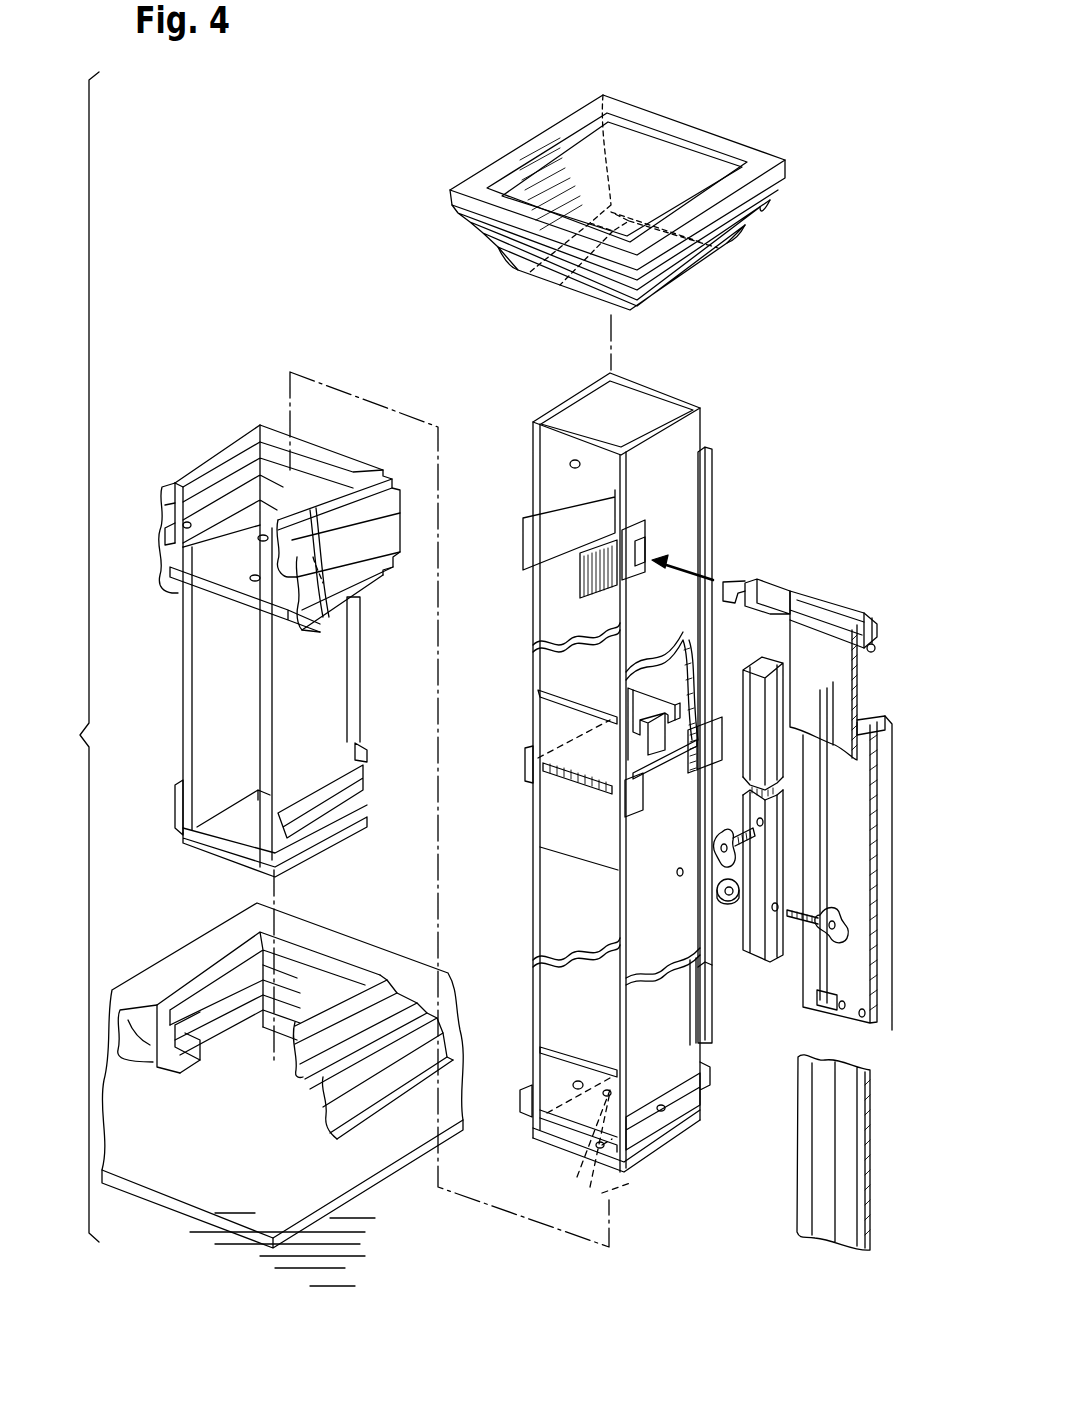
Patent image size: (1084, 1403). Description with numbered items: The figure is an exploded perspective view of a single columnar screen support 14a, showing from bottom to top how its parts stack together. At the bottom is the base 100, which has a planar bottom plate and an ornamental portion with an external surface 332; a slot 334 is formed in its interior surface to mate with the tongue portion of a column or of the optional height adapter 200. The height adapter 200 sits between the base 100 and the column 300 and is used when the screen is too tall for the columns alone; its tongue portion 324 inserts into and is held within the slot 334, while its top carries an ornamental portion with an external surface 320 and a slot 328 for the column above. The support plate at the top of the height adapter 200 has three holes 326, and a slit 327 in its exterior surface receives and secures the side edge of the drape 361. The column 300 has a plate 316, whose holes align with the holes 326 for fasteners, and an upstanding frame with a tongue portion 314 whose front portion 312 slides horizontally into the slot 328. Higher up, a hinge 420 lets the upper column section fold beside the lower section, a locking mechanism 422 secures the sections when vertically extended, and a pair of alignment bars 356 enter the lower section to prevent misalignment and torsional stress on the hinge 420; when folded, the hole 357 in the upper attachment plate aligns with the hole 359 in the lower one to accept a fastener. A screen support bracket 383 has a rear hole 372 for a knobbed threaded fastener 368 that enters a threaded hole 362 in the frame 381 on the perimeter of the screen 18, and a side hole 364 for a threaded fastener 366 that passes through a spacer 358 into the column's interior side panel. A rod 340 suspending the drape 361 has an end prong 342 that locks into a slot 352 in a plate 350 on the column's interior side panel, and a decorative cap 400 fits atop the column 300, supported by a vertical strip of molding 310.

The columnar screen support 14a is at (80, 735).
The decorative cap 400 is at (527, 130).
The column 300 is at (557, 385).
The strip of molding 310 is at (712, 447).
The plate 350 is at (640, 530).
The slot 352 is at (646, 552).
The end prong 342 is at (740, 580).
The rod 340 is at (795, 586).
The drape 361 is at (827, 615).
The hole 357 is at (570, 464).
The alignment bars 356 is at (578, 585).
The screen support bracket 383 is at (758, 688).
The screen 18 is at (860, 782).
The locking mechanism 422 is at (645, 720).
The hinge 420 is at (560, 780).
The hole 372 is at (713, 845).
The threaded fastener 368 is at (677, 872).
The spacer 358 is at (725, 905).
The hole 364 is at (776, 915).
The threaded fastener 366 is at (815, 935).
The frame 381 is at (818, 1000).
The threaded hole 362 is at (883, 940).
The hole 359 is at (573, 1085).
The plate 316 is at (565, 1150).
The holes 326 is at (142, 478).
The tongue portion 314 is at (690, 1107).
The front portion 312 is at (718, 1050).
The height adapter 200 is at (210, 445).
The external surface 320 is at (263, 538).
The slit 327 is at (400, 540).
The slot 328 is at (247, 543).
The tongue portion 324 is at (175, 790).
The base 100 is at (185, 935).
The slot 334 is at (190, 1032).
The external surface 332 is at (360, 1120).